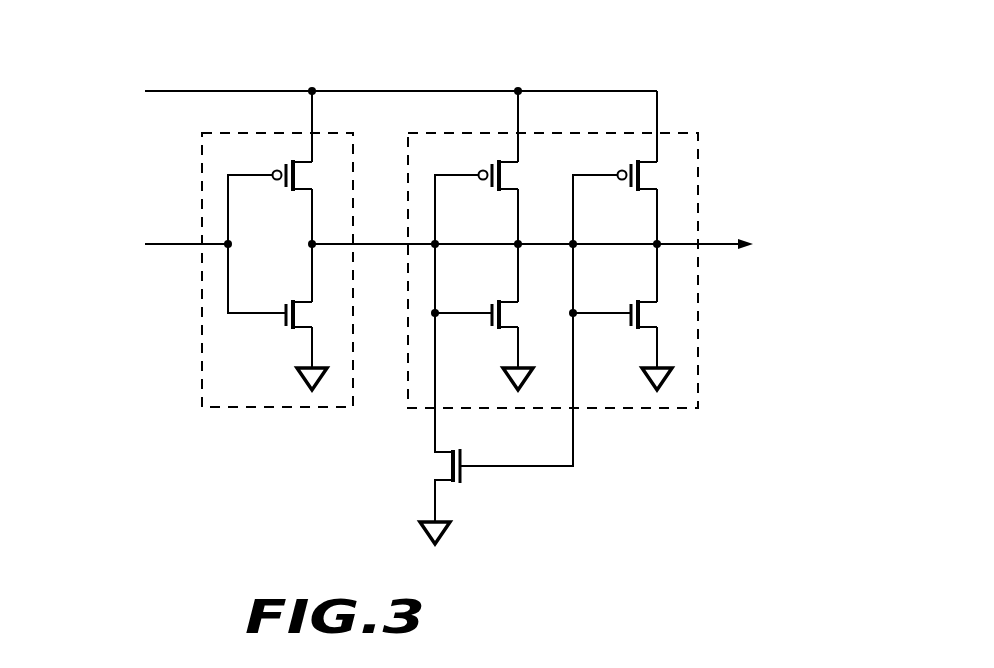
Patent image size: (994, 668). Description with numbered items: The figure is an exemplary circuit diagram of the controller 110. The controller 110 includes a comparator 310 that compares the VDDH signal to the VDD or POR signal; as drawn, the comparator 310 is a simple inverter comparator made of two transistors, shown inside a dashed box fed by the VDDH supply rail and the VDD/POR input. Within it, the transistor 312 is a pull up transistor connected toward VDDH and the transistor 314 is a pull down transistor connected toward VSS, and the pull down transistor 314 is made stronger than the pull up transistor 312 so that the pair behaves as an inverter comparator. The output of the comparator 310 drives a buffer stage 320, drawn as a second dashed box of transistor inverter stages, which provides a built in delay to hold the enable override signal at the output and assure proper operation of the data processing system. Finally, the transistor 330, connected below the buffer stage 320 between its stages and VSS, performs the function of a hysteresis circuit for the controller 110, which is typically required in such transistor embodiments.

The controller 110 is at (655, 69).
The comparator 310 is at (250, 408).
The pull up transistor 312 is at (285, 190).
The pull down transistor 314 is at (285, 328).
The buffer stage 320 is at (647, 409).
The transistor 330 is at (460, 484).